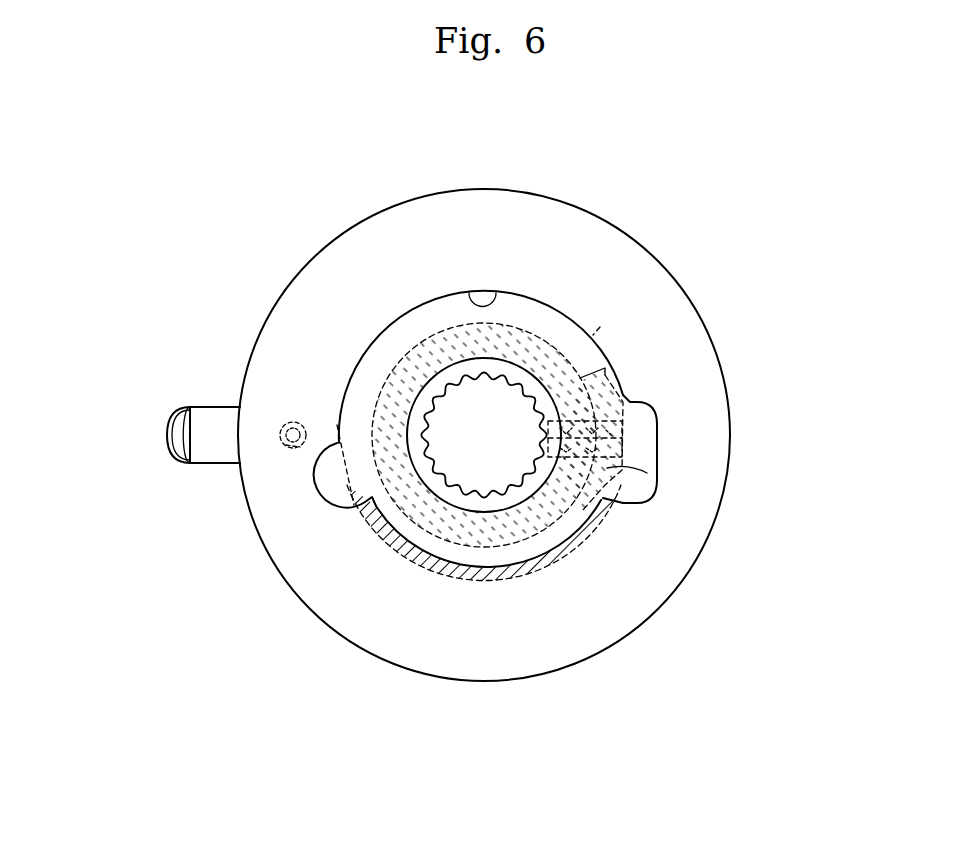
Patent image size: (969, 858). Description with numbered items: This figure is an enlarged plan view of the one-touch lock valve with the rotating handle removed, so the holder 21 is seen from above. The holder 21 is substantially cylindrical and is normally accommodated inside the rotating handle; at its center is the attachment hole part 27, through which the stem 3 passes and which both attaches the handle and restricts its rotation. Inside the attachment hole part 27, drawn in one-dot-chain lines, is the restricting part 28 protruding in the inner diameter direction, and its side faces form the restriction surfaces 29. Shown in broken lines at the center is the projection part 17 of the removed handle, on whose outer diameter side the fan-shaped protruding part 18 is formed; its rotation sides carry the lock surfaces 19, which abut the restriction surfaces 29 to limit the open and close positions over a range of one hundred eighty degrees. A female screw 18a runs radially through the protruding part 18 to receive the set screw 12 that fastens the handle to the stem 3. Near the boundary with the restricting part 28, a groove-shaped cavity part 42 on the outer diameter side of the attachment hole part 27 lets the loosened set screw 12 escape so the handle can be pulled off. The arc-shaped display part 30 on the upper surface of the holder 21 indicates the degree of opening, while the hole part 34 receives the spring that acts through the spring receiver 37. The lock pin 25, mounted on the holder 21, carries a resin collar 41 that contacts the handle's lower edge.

The stem 3 is at (482, 440).
The set screw 12 is at (620, 437).
The projection part 17 is at (517, 345).
The protruding part 18 is at (625, 398).
The female screw 18a is at (630, 401).
The lock surface 19 is at (592, 335).
The holder 21 is at (356, 252).
The lock pin 25 is at (170, 437).
The attachment hole part 27 is at (470, 291).
The restricting part 28 is at (470, 580).
The restriction surface 29 is at (647, 473).
The display part 30 is at (386, 598).
The hole part 34 is at (286, 420).
The spring receiver 37 is at (296, 448).
The collar 41 is at (207, 452).
The cavity part 42 is at (645, 440).